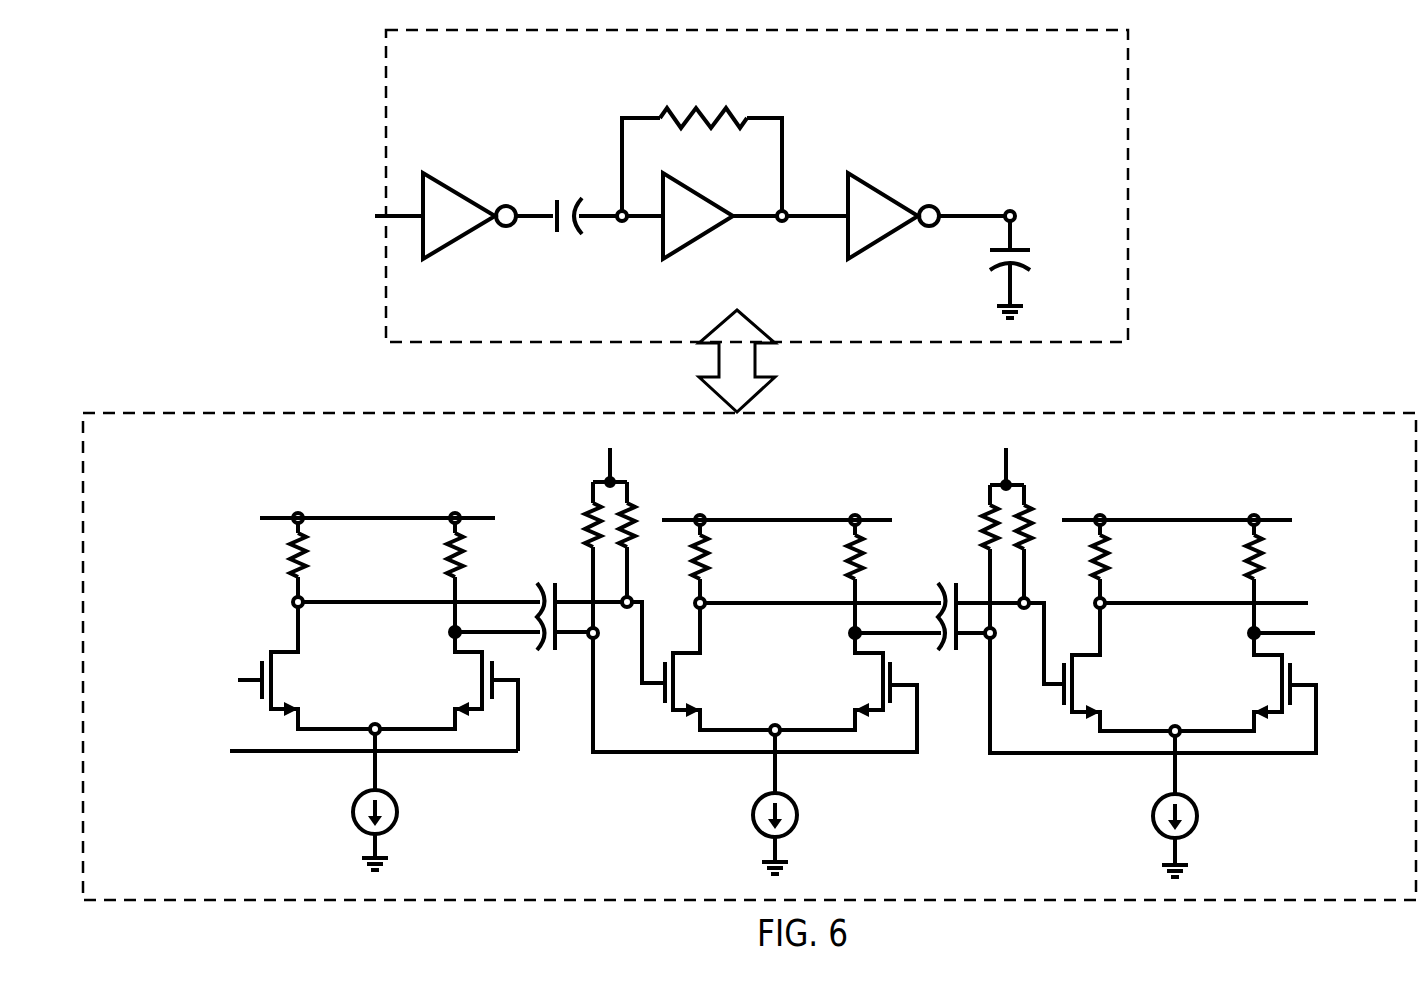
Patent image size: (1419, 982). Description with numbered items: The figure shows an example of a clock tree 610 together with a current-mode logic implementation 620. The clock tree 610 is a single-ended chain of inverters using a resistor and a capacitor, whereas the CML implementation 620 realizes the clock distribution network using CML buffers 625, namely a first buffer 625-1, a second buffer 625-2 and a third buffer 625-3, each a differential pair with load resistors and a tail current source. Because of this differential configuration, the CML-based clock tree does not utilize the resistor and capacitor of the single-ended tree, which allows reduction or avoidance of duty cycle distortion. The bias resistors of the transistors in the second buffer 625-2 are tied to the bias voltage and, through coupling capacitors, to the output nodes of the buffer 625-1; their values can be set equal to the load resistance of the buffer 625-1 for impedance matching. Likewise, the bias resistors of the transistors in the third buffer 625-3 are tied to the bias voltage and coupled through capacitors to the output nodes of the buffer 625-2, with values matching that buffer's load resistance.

The clock tree 610 is at (1040, 76).
The current-mode logic (CML) implementation 620 is at (1363, 468).
The CML buffers 625 is at (243, 468).
The CML buffer 625-1 is at (358, 490).
The CML buffer 625-2 is at (784, 487).
The CML buffer 625-3 is at (1163, 493).